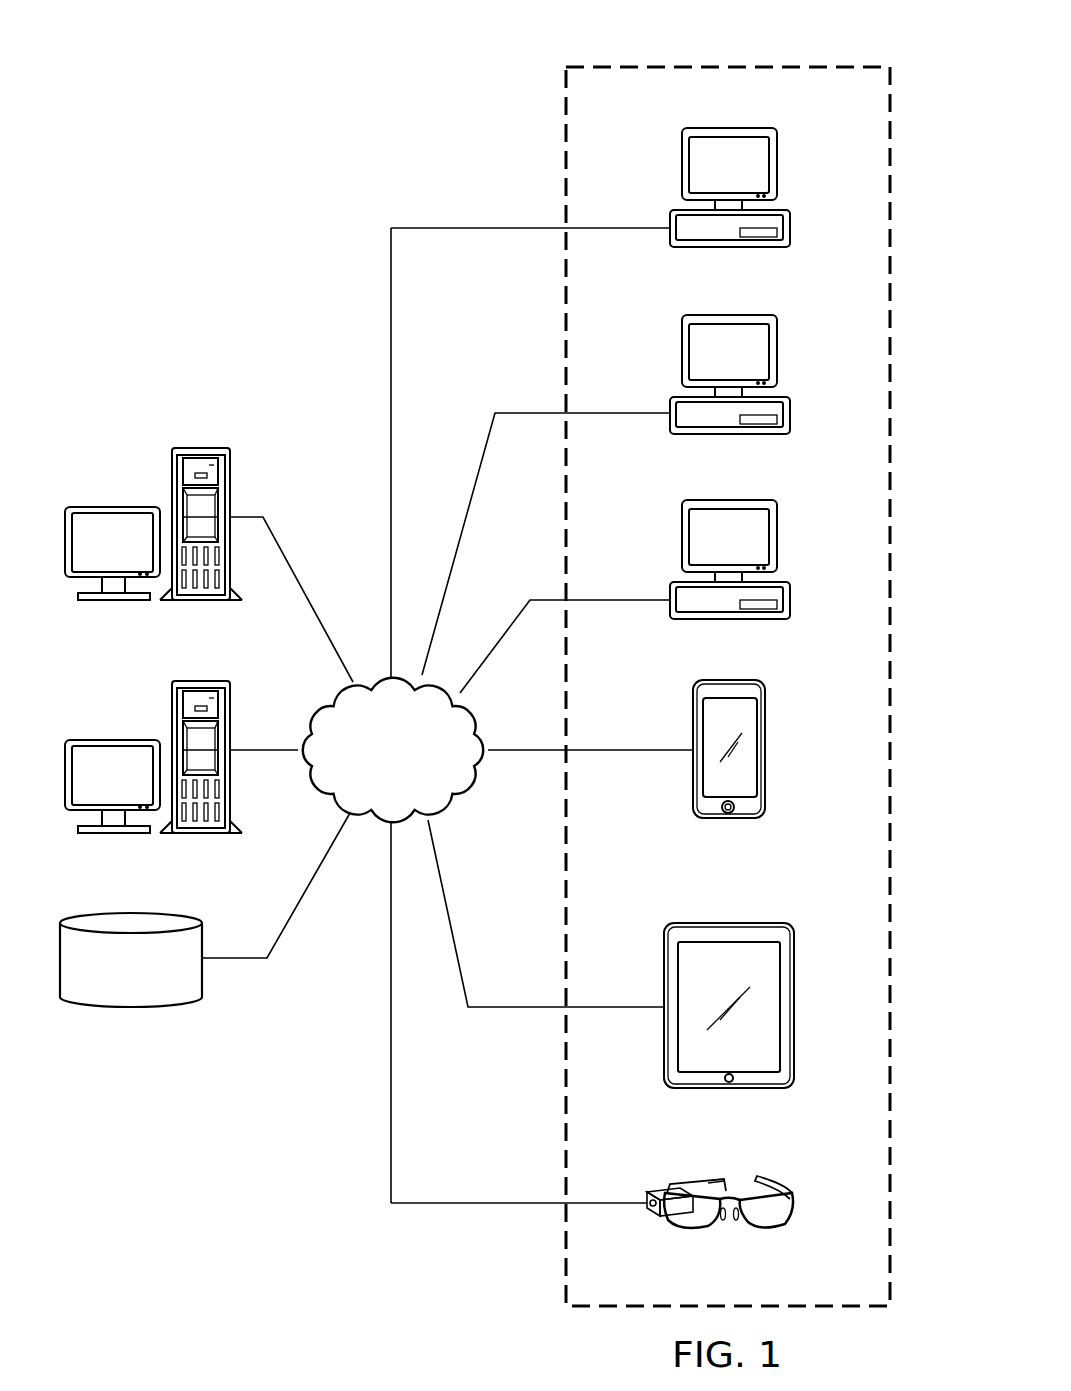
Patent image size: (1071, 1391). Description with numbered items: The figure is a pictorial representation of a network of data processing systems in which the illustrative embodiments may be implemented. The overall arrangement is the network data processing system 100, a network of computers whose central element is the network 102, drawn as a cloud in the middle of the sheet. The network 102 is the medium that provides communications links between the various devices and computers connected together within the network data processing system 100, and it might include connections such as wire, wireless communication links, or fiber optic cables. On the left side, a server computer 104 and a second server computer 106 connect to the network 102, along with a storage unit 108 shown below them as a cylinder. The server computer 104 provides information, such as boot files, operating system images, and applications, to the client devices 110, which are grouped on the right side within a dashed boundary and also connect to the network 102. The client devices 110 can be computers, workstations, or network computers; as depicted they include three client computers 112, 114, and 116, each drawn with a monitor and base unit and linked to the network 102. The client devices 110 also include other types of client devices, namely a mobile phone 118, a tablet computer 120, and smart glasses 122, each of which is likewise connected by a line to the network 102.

The network data processing system 100 is at (254, 319).
The network 102 is at (370, 784).
The server computer 104 is at (113, 505).
The server computer 106 is at (160, 772).
The storage unit 108 is at (130, 1008).
The client devices 110 is at (743, 58).
The client computer 112 is at (777, 164).
The client computer 114 is at (742, 389).
The client computer 116 is at (742, 574).
The mobile phone 118 is at (765, 768).
The tablet computer 120 is at (794, 1017).
The smart glasses 122 is at (795, 1207).